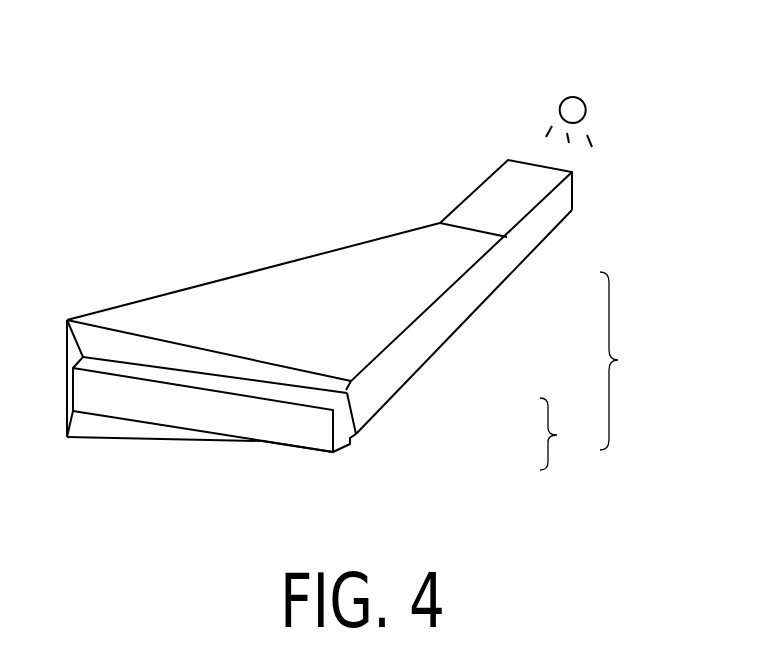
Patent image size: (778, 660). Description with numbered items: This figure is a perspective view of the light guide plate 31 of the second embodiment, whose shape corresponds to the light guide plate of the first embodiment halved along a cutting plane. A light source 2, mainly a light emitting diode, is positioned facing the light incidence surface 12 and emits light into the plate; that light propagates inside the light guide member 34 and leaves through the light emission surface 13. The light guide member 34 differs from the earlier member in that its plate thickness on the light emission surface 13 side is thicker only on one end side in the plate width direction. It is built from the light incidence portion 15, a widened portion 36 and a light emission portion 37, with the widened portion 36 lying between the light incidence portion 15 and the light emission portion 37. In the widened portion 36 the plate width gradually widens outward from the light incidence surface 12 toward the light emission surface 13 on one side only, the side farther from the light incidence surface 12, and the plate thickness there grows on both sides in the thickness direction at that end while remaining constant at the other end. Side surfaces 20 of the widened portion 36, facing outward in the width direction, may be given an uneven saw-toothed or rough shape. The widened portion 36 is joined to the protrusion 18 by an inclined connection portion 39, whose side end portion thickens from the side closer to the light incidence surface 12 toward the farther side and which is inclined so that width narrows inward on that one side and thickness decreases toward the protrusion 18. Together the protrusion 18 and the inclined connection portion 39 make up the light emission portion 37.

The light source 2 is at (572, 80).
The light incidence surface 12 is at (516, 146).
The light emission surface 13 is at (132, 412).
The light incidence portion 15 is at (508, 217).
The protrusion 18 is at (345, 420).
The side surfaces 20 is at (247, 262).
The light guide plate 31 is at (138, 126).
The light guide member 34 is at (627, 361).
The widened portion 36 is at (413, 302).
The light emission portion 37 is at (567, 434).
The inclined connection portion 39 is at (350, 395).